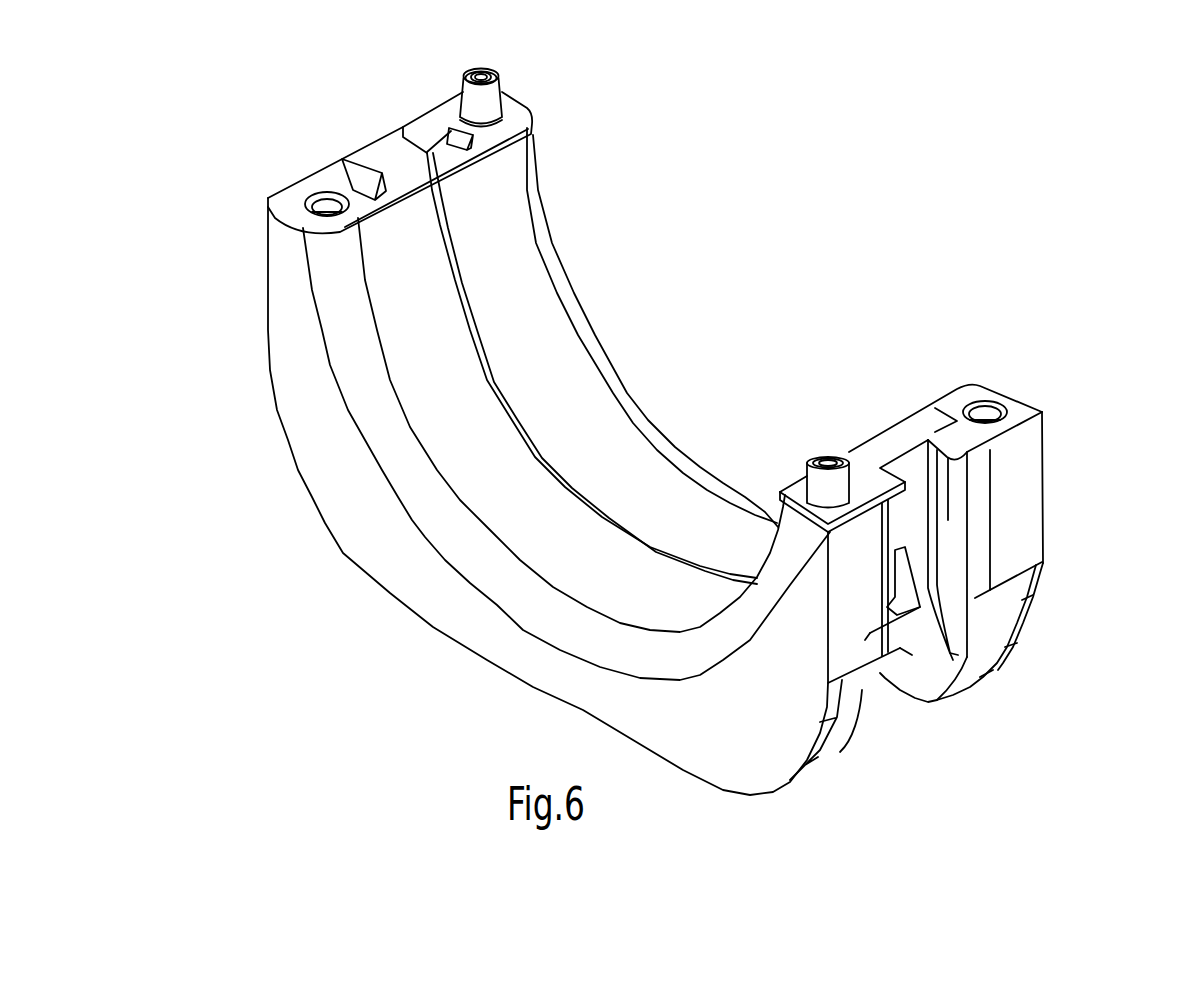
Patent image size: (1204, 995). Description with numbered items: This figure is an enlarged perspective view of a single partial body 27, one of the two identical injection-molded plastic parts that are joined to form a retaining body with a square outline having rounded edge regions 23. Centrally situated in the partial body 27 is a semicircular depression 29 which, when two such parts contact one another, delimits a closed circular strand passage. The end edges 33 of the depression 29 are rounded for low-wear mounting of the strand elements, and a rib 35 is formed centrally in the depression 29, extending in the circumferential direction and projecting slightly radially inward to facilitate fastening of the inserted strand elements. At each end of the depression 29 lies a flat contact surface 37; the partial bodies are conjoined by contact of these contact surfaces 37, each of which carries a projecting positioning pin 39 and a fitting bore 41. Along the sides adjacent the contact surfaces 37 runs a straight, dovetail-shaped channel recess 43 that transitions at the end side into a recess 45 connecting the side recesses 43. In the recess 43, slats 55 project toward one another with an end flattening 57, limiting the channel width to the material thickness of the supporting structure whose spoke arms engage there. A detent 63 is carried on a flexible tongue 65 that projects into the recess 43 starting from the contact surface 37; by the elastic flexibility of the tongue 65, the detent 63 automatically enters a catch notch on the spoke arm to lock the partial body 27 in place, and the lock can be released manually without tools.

The rounded edge region 23 is at (340, 552).
The partial body 27 is at (1023, 498).
The semicircular depression 29 is at (440, 365).
The end edge 33 is at (575, 308).
The rib 35 is at (533, 427).
The contact surface 37 is at (500, 130).
The positioning pin 39 is at (475, 103).
The fitting bore 41 is at (323, 194).
The channel-shaped recess 43 is at (397, 177).
The recess 45 is at (913, 680).
The slat 55 is at (427, 152).
The end flattening 57 is at (953, 689).
The detent 63 is at (922, 668).
The flexible tongue 65 is at (882, 678).